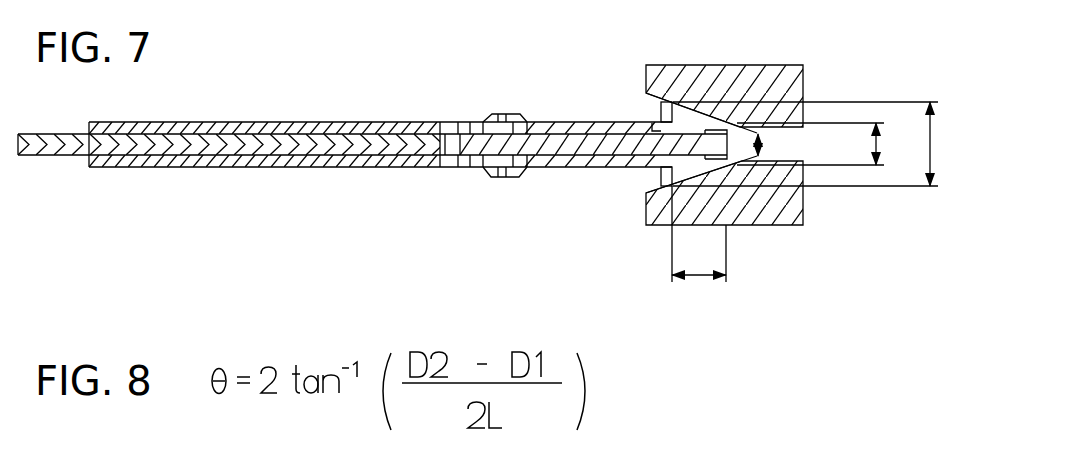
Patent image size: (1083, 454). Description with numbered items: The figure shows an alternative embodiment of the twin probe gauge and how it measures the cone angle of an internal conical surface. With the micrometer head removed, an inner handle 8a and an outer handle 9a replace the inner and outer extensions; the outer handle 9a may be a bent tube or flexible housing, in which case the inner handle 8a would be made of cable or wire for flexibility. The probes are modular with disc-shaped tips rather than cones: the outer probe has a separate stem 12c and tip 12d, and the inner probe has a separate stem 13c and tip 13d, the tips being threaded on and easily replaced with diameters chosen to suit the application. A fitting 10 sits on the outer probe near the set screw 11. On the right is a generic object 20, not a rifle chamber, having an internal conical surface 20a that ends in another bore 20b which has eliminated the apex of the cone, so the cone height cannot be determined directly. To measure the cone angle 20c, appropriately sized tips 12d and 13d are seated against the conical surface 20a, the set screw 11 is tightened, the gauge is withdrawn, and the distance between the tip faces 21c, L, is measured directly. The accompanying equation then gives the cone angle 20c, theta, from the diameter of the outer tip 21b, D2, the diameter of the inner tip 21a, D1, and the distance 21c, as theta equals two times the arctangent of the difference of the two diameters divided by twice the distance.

The inner handle 8a is at (55, 168).
The outer handle 9a is at (165, 171).
The fixing nut 10 is at (483, 116).
The set screw 11 is at (492, 180).
The stem of outer probe 12c is at (558, 122).
The tip of outer probe 12d is at (652, 112).
The stem of inner probe 13c is at (582, 150).
The tip of inner probe 13d is at (693, 167).
The object 20 is at (695, 61).
The internal conical surface 20a is at (717, 112).
The bore 20b is at (784, 122).
The cone angle 20c is at (792, 146).
The diameter of inner tip 21a is at (871, 152).
The diameter of outer tip 21b is at (914, 162).
The distance between probe faces 21c is at (703, 279).